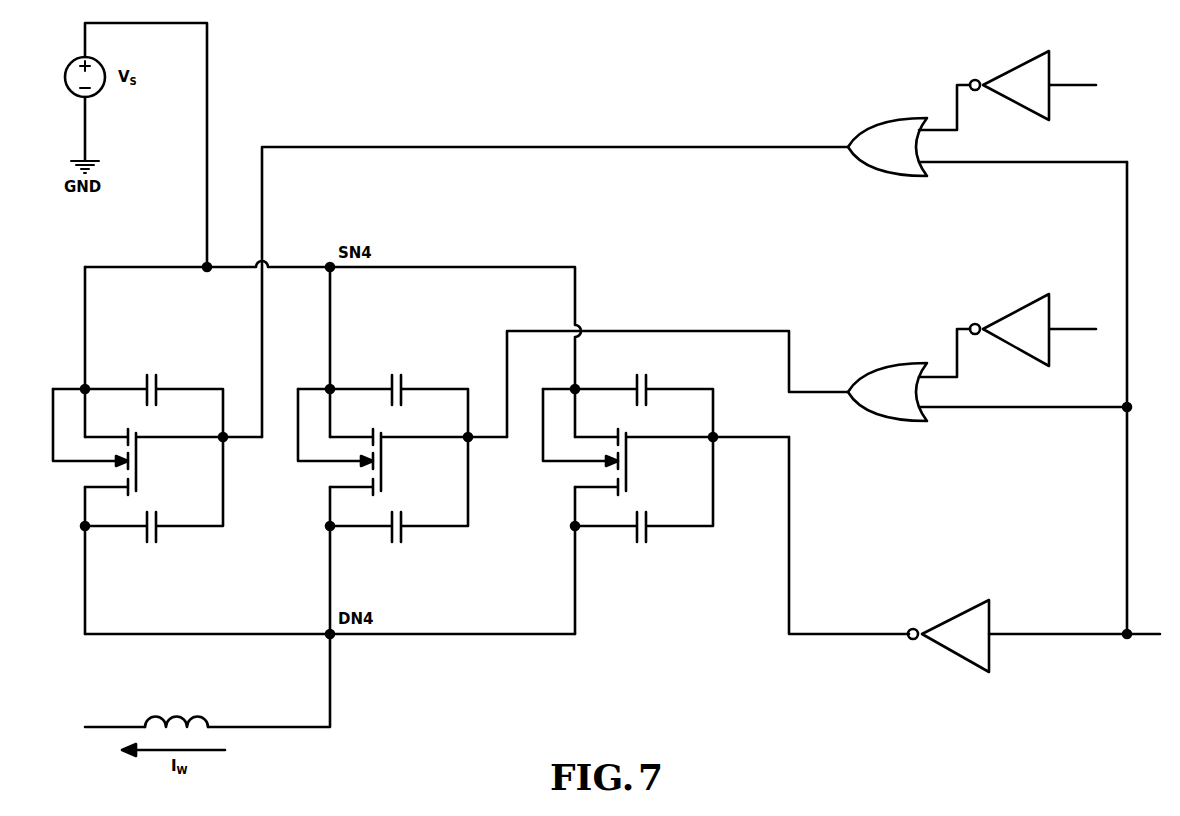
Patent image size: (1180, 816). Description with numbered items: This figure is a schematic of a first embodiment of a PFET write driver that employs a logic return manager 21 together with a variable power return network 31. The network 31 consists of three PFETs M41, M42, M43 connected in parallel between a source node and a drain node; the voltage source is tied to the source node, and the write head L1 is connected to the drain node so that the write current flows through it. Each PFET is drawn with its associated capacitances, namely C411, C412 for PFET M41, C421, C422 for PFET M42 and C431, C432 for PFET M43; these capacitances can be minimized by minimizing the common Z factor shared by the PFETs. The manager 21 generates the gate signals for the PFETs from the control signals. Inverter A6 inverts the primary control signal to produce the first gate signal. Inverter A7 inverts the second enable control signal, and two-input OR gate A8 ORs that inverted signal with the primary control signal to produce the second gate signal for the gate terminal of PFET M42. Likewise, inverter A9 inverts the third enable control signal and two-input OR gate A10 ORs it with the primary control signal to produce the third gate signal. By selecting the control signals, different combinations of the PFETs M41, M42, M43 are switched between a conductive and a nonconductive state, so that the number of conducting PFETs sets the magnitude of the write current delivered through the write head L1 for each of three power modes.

The logic return manager 21 is at (766, 97).
The variable power return network 31 is at (613, 228).
The PFET M41 is at (666, 442).
The PFET M42 is at (402, 442).
The PFET M43 is at (157, 442).
The capacitance C411 is at (628, 395).
The capacitance C412 is at (644, 500).
The capacitance C421 is at (383, 395).
The capacitance C422 is at (399, 500).
The capacitance C431 is at (138, 395).
The capacitance C432 is at (154, 500).
The inverter A6 is at (948, 646).
The inverter A7 is at (1033, 325).
The two-input OR gate A8 is at (987, 387).
The inverter A9 is at (1033, 84).
The two-input OR gate A10 is at (987, 150).
The write head L1 is at (176, 710).